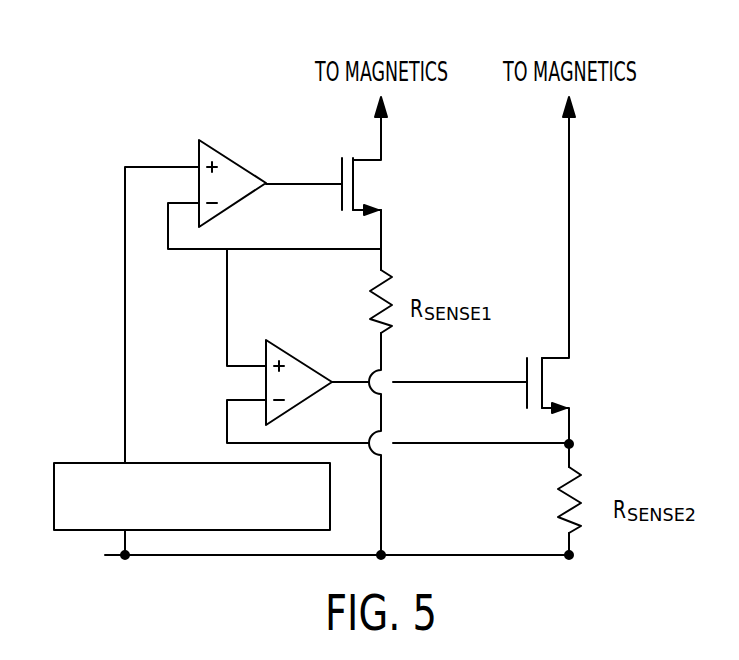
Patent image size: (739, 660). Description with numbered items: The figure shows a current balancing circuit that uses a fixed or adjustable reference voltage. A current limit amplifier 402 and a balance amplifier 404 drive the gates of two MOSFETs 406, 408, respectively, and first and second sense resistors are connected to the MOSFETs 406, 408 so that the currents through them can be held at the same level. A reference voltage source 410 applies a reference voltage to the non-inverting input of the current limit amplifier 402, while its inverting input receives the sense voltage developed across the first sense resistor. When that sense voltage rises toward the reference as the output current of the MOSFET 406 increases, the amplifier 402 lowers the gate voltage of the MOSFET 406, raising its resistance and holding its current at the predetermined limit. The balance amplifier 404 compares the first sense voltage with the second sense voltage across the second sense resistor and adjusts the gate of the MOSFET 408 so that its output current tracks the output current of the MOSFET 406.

The current limit amplifier 402 is at (237, 160).
The balance amplifier 404 is at (305, 359).
The MOSFET 406 is at (385, 185).
The MOSFET 408 is at (577, 383).
The reference voltage source 410 is at (80, 462).